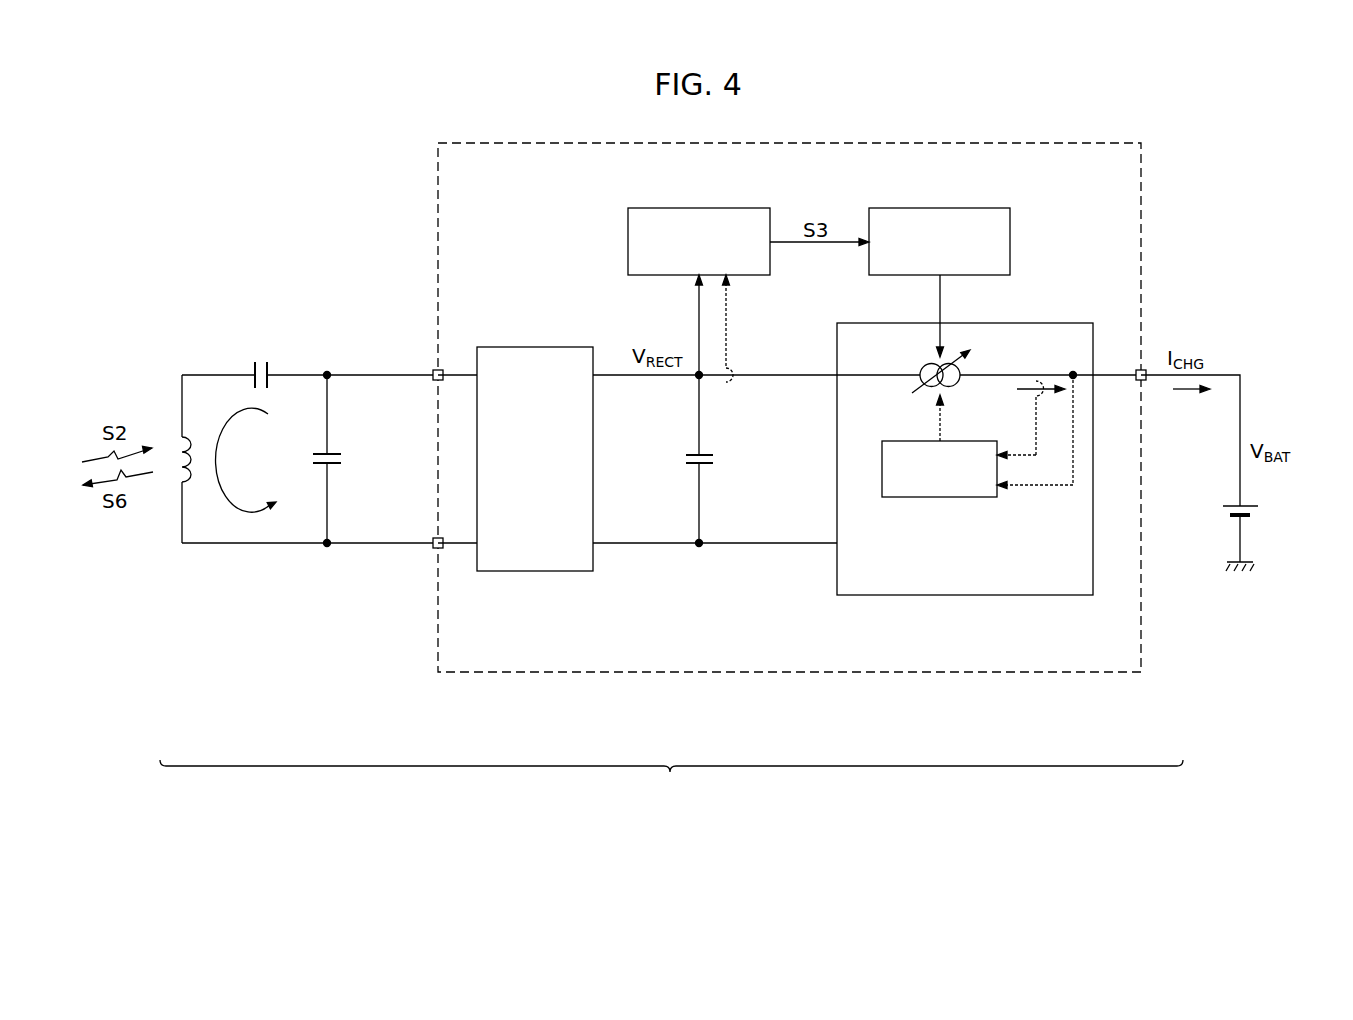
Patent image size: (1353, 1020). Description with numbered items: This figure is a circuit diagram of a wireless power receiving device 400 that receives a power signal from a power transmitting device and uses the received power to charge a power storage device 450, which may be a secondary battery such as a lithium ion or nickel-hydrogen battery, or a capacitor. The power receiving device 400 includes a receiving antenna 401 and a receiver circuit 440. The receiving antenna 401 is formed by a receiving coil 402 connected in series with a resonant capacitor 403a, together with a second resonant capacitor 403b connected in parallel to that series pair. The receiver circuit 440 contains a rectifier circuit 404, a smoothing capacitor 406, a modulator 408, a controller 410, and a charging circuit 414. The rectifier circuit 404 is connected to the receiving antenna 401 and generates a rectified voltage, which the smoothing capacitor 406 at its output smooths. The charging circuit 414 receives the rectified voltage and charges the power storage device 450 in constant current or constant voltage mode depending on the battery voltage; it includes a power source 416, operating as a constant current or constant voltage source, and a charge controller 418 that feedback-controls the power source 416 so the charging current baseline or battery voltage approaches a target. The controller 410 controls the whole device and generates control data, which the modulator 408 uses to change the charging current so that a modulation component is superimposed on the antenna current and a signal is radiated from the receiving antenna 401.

The power receiving device 400 is at (671, 783).
The receiving antenna 401 is at (362, 572).
The receiving coil 402 is at (168, 470).
The resonant capacitor 403a is at (261, 358).
The resonant capacitor 403b is at (350, 459).
The rectifier circuit 404 is at (540, 571).
The smoothing capacitor 406 is at (718, 461).
The modulator 408 is at (962, 208).
The controller 410 is at (722, 208).
The charging circuit 414 is at (920, 595).
The power source 416 is at (923, 356).
The charge controller 418 is at (930, 497).
The receiver circuit 440 is at (760, 672).
The power storage device 450 is at (1262, 512).